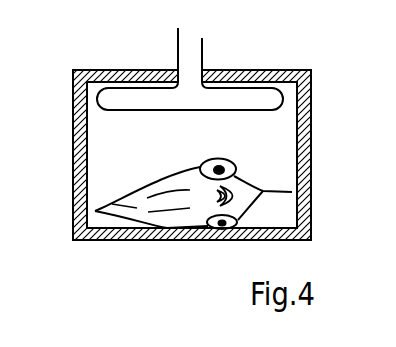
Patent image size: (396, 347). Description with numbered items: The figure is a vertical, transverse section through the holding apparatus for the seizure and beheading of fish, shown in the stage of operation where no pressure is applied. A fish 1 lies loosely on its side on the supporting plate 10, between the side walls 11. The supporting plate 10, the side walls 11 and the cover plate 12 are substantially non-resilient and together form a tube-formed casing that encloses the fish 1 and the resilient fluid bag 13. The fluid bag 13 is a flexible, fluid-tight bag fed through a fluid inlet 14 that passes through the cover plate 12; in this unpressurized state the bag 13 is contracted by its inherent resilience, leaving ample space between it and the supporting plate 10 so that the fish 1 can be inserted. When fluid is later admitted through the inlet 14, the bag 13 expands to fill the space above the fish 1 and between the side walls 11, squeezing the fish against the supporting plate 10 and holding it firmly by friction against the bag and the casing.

The fish 1 is at (197, 202).
The supporting plate 10 is at (184, 155).
The side walls 11 is at (73, 160).
The cover plate 12 is at (137, 70).
The fluid bag 13 is at (98, 103).
The fluid inlet 14 is at (205, 52).